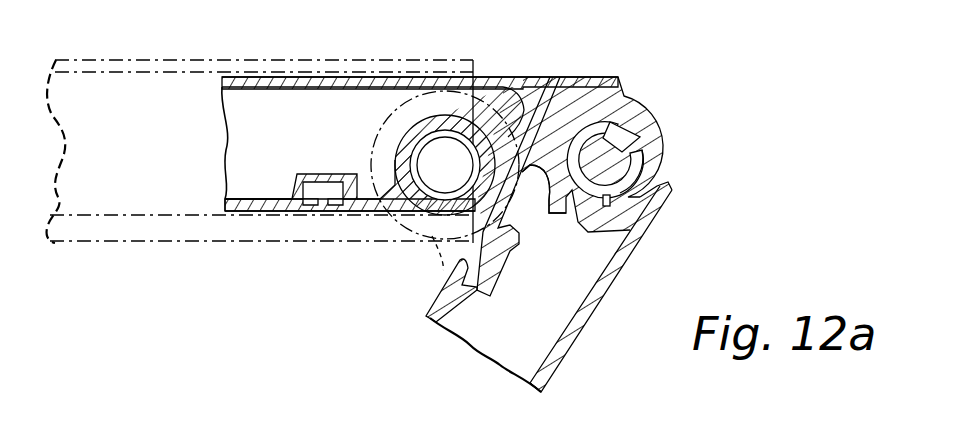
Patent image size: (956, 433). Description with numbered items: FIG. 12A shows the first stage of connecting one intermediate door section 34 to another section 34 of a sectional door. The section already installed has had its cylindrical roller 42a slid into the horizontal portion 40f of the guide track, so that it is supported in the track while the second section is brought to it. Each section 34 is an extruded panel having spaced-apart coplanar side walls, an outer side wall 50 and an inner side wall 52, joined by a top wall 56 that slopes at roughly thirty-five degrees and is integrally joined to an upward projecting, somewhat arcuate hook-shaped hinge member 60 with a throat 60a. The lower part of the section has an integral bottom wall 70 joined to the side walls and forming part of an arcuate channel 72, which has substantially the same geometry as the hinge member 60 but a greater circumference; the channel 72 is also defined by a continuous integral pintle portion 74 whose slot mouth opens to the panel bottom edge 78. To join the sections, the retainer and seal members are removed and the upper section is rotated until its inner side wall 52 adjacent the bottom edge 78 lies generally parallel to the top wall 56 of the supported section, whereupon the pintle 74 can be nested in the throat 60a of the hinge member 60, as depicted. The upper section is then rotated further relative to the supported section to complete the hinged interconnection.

The horizontal portion of guide track 40f is at (177, 56).
The top wall 56 is at (534, 145).
The outer side wall 50 is at (617, 273).
The inner side wall 52 is at (425, 303).
The hinge member 60 is at (667, 127).
The throat of hinge member 60a is at (667, 153).
The panel bottom edge 78 is at (622, 98).
The pintle portion 74 is at (660, 183).
The bottom wall 70 is at (653, 212).
The arcuate channel 72 is at (580, 227).
The cylindrical roller 42a is at (443, 268).
The intermediate door section 34 is at (262, 211).